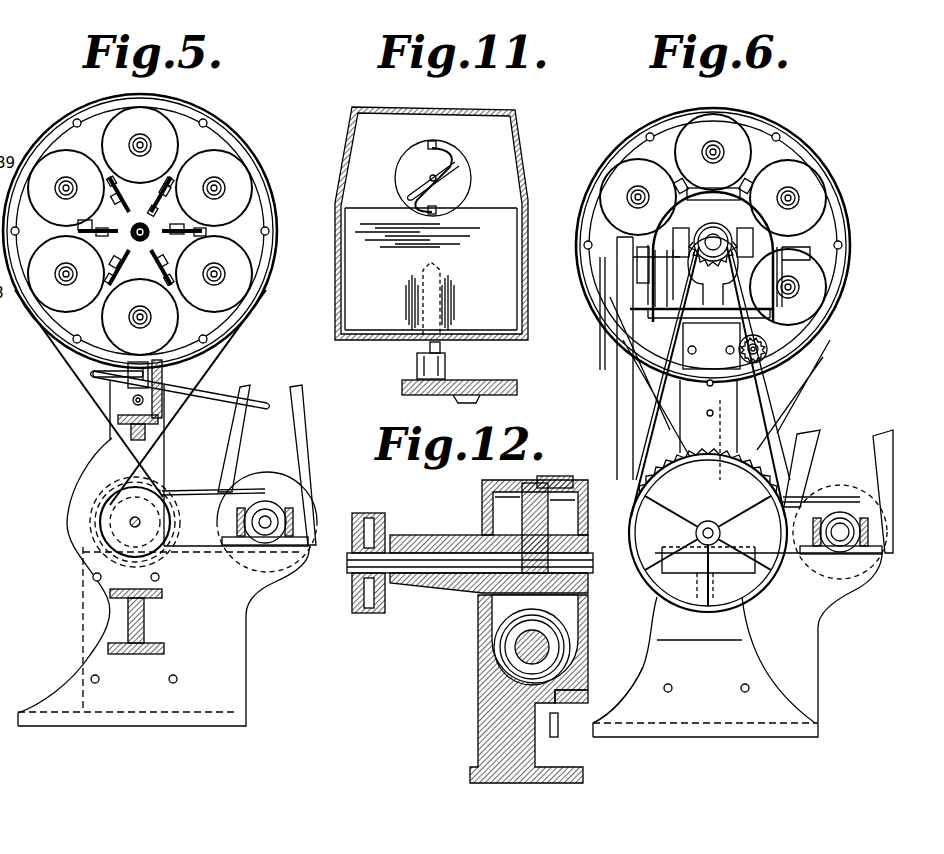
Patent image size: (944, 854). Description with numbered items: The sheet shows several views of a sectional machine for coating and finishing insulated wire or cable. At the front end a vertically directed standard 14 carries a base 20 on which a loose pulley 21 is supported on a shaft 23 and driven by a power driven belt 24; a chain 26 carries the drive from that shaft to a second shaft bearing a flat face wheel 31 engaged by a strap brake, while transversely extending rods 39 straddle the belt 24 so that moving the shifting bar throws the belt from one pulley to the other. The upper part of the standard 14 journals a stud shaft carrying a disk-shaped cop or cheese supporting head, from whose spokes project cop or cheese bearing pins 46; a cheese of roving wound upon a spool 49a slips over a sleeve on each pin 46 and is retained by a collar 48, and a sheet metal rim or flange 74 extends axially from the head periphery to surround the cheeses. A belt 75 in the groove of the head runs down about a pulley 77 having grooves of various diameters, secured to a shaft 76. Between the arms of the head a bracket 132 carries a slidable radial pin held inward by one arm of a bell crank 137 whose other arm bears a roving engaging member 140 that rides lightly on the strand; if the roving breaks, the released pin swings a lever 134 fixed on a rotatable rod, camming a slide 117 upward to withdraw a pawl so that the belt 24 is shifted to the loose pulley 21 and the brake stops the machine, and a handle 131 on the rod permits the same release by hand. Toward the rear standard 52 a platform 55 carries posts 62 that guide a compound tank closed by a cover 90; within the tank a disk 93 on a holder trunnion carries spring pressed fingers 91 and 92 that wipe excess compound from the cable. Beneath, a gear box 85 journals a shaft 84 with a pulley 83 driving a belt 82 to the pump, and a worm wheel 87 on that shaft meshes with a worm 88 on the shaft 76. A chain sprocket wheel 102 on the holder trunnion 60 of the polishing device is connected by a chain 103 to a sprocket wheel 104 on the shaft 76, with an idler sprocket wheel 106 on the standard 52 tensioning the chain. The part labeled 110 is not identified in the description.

In FIG. 5, the standard 14 is at (116, 620).
In FIG. 5, the base 20 is at (227, 597).
In FIG. 6, the base 20 is at (803, 622).
In FIG. 5, the loose pulley 21 is at (275, 486).
In FIG. 5, the shaft 23 is at (292, 520).
In FIG. 6, the shaft 23 is at (856, 532).
In FIG. 5, the power driven belt 24 is at (306, 424).
In FIG. 6, the power driven belt 24 is at (886, 448).
In FIG. 5, the chain 26 is at (203, 490).
In FIG. 6, the chain 26 is at (826, 497).
In FIG. 5, the flat face wheel 31 is at (172, 519).
In FIG. 5, the transversely extending rods 39 is at (265, 403).
In FIG. 5, the cop or cheese bearing pin 46 is at (147, 147).
In FIG. 6, the cop or cheese bearing pin 46 is at (720, 150).
In FIG. 5, the collar 48 is at (140, 140).
In FIG. 6, the collar 48 is at (712, 147).
In FIG. 5, the spool 49a is at (225, 185).
In FIG. 6, the spool 49a is at (800, 195).
In FIG. 6, the rear end standard 52 is at (652, 667).
In FIG. 11, the platform 55 is at (519, 389).
In FIG. 6, the holder trunnion 60 is at (738, 250).
In FIG. 11, the posts 62 is at (445, 350).
In FIG. 5, the sheet metal rim or flange 74 is at (232, 138).
In FIG. 5, the belt 75 is at (218, 356).
In FIG. 6, the belt 75 is at (815, 378).
In FIG. 5, the shaft 76 is at (131, 524).
In FIG. 12, the shaft 76 is at (512, 652).
In FIG. 6, the shaft 76 is at (700, 538).
In FIG. 5, the pulley 77 is at (112, 519).
In FIG. 6, the belt 82 is at (618, 372).
In FIG. 12, the pulley 83 is at (372, 513).
In FIG. 12, the shaft 84 is at (418, 562).
In FIG. 12, the gear box 85 is at (478, 622).
In FIG. 12, the worm wheel 87 is at (548, 492).
In FIG. 12, the worm 88 is at (588, 632).
In FIG. 11, the cover 90 is at (521, 140).
In FIG. 11, the spring pressed finger 91 is at (410, 180).
In FIG. 11, the spring pressed finger 92 is at (452, 180).
In FIG. 11, the disk 93 is at (412, 156).
In FIG. 6, the chain sprocket wheel 102 is at (735, 240).
In FIG. 6, the chain 103 is at (784, 412).
In FIG. 6, the sprocket wheel 104 is at (772, 474).
In FIG. 6, the idler sprocket wheel 106 is at (780, 350).
In FIG. 6, the upright guide 110 is at (612, 327).
In FIG. 5, the slide 117 is at (125, 398).
In FIG. 5, the handle 131 is at (95, 376).
In FIG. 5, the bracket 132 is at (176, 179).
In FIG. 6, the bracket 132 is at (762, 182).
In FIG. 5, the lever 134 is at (158, 304).
In FIG. 5, the bell crank 137 is at (171, 190).
In FIG. 5, the roving engaging member 140 is at (158, 212).